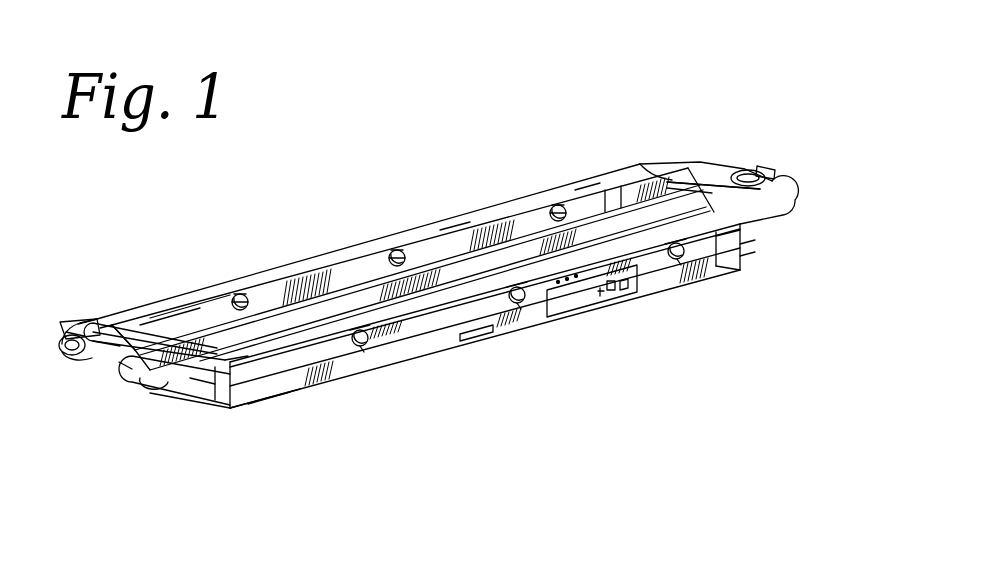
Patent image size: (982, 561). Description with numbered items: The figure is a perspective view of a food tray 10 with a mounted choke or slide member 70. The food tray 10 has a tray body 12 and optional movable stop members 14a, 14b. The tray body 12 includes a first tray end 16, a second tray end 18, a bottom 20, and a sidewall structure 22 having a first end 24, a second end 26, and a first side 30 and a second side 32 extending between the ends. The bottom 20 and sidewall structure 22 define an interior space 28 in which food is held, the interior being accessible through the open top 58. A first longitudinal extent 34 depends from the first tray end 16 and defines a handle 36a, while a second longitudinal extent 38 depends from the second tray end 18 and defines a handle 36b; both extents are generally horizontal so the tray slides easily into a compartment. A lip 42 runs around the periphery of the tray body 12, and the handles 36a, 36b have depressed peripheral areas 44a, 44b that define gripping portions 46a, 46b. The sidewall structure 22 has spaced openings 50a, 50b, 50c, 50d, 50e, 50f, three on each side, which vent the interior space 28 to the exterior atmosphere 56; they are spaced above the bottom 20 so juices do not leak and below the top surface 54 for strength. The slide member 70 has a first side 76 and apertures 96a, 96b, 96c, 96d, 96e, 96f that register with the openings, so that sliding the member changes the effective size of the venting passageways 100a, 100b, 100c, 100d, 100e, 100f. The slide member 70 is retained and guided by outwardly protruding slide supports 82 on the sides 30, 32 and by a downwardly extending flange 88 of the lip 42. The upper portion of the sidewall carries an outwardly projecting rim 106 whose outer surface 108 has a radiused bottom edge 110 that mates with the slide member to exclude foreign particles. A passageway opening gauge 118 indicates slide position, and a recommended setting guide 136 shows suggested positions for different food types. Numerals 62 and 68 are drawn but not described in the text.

The food tray 10 is at (632, 100).
The tray body 12 is at (727, 265).
The movable stop member 14a is at (117, 356).
The movable stop member 14b is at (744, 172).
The first tray end 16 is at (105, 362).
The second tray end 18 is at (760, 169).
The bottom 20 is at (265, 375).
The sidewall structure 22 is at (292, 388).
The first end 24 is at (200, 384).
The second end 26 is at (740, 277).
The interior space 28 is at (461, 268).
The first side 30 is at (441, 338).
The second side 32 is at (188, 316).
The first longitudinal extent 34 is at (112, 325).
The handle 36a is at (98, 327).
The handle 36b is at (684, 180).
The second longitudinal extent 38 is at (658, 174).
The lip 42 is at (166, 320).
The depressed peripheral area 44a is at (68, 350).
The depressed peripheral area 44b is at (150, 388).
The gripping portion 46a is at (74, 338).
The gripping portion 46b is at (128, 378).
The opening 50a is at (355, 340).
The opening 50b is at (515, 300).
The opening 50c is at (667, 252).
The opening 50d is at (235, 298).
The opening 50e is at (388, 253).
The opening 50f is at (552, 214).
The top surface 54 is at (125, 322).
The exterior atmosphere 56 is at (228, 154).
The open top 58 is at (592, 192).
The cross post 62 is at (620, 206).
The rail top surface 68 is at (452, 218).
The slide member 70 is at (158, 406).
The first side 76 is at (272, 398).
The slide support 82 is at (477, 332).
The flange 88 is at (237, 362).
The aperture 96a is at (357, 335).
The aperture 96b is at (505, 292).
The aperture 96c is at (688, 245).
The aperture 96d is at (238, 297).
The aperture 96e is at (392, 250).
The aperture 96f is at (552, 212).
The passageway 100a is at (362, 343).
The passageway 100b is at (527, 292).
The passageway 100c is at (695, 245).
The passageway 100d is at (246, 299).
The passageway 100e is at (402, 251).
The passageway 100f is at (556, 205).
The rim 106 is at (742, 242).
The outer surface 108 is at (734, 238).
The radiused bottom edge 110 is at (746, 250).
The passageway opening gauge 118 is at (585, 315).
The recommended setting guide 136 is at (617, 297).